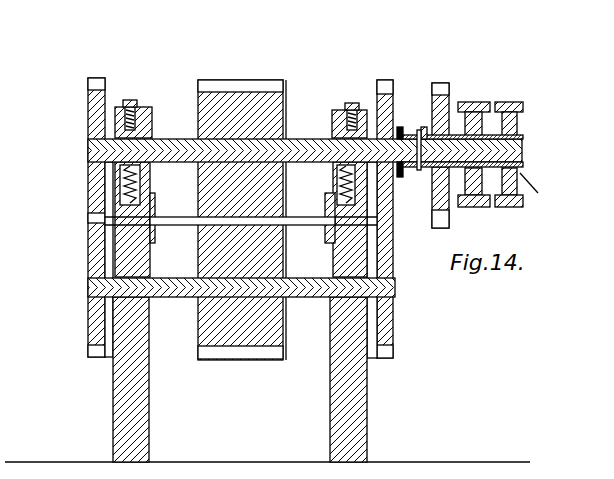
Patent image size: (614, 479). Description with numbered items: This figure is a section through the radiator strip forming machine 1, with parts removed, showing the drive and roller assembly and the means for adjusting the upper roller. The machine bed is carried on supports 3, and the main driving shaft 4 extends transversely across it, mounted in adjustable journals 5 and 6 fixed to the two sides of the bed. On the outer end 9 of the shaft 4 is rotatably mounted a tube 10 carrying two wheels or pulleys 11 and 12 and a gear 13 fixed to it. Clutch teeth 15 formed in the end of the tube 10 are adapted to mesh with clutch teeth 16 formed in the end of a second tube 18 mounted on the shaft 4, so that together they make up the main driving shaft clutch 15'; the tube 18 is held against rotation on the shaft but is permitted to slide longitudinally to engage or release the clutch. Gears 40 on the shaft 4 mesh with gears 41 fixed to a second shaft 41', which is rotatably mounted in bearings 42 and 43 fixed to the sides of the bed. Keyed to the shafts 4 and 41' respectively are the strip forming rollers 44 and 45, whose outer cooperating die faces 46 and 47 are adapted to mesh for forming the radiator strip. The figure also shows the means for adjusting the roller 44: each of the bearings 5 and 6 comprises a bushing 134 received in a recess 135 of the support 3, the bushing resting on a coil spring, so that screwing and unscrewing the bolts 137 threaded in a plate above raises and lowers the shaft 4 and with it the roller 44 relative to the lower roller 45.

The radiator strip forming machine 1 is at (368, 382).
The supports 3 is at (368, 422).
The main driving shaft 4 is at (525, 150).
The adjustable journal 5 is at (150, 133).
The adjustable journal 6 is at (333, 131).
The outer end of shaft 9 is at (525, 161).
The tube 10 is at (520, 136).
The wheel or pulley 11 is at (472, 102).
The wheel or pulley 12 is at (512, 102).
The gear 13 is at (438, 83).
The clutch teeth 15 is at (421, 110).
The main driving shaft clutch 15' is at (410, 119).
The clutch teeth 16 is at (419, 170).
The tube 18 is at (399, 178).
The gears 40 is at (97, 78).
The gears 41 is at (247, 336).
The shaft 41' is at (266, 287).
The bearing 42 is at (150, 300).
The bearing 43 is at (330, 300).
The strip forming roller 44 is at (291, 113).
The strip forming roller 45 is at (283, 346).
The die face 46 is at (269, 80).
The die face 47 is at (248, 359).
The bushing 134 is at (106, 170).
The recess 135 is at (128, 200).
The bolts 137 is at (131, 100).